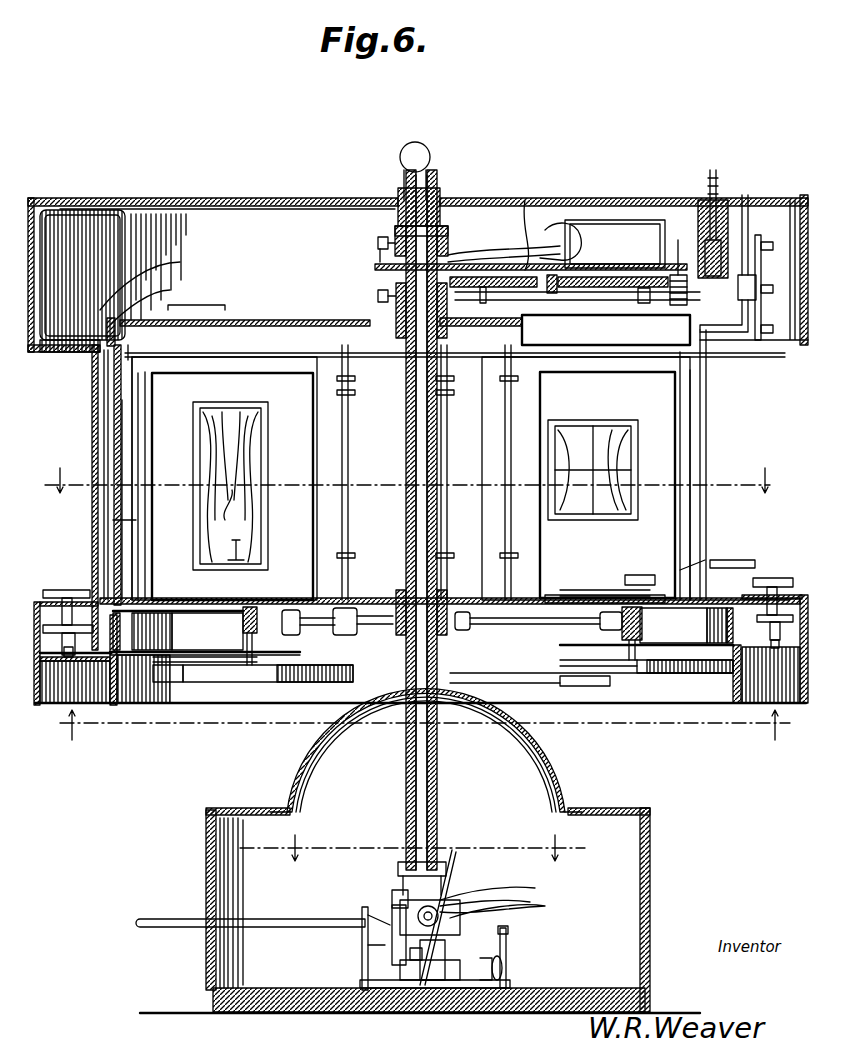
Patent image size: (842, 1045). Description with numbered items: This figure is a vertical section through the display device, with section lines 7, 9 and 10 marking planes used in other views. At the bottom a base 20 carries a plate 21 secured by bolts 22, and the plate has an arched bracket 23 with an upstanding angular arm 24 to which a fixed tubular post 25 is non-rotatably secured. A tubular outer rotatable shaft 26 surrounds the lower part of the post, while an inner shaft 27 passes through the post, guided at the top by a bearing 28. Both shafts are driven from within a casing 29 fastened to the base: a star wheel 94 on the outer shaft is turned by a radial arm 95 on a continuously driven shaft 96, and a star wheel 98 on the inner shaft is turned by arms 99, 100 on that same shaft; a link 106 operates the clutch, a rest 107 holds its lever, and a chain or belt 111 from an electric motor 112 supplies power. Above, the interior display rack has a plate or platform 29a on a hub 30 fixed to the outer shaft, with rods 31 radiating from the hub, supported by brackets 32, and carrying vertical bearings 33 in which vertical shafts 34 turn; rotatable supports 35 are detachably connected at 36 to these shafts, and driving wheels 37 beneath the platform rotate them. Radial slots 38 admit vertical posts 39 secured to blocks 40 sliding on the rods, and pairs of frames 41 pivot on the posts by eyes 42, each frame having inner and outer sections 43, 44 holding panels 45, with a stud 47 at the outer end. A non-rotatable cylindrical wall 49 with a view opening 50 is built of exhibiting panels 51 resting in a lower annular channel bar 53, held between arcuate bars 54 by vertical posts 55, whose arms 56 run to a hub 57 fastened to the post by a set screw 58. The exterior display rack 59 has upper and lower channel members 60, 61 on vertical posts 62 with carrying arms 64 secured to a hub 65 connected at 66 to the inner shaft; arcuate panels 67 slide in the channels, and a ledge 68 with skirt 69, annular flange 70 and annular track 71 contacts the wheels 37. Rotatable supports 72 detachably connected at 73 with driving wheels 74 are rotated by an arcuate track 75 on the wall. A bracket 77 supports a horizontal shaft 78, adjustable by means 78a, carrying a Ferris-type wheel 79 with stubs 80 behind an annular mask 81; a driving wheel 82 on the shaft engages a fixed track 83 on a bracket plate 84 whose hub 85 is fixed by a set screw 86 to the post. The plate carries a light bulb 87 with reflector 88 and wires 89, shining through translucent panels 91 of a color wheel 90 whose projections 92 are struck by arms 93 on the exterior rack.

The section line 7 is at (411, 458).
The section line 9 is at (418, 724).
The section line 10 is at (426, 848).
The base 20 is at (300, 1012).
The plate 21 is at (510, 985).
The bolts 22 is at (350, 988).
The arched bracket 23 is at (475, 975).
The upstanding angular arm 24 is at (460, 900).
The tubular post 25 is at (380, 270).
The outer rotatable shaft 26 is at (406, 752).
The inner shaft 27 is at (440, 206).
The bearing 28 is at (395, 235).
The casing / interior display rack 29 is at (690, 466).
The plate or platform 29a is at (712, 598).
The hub 30 is at (398, 640).
The rods 31 is at (318, 640).
The brackets 32 is at (330, 682).
The vertical bearings 33 is at (240, 630).
The vertical shafts 34 is at (655, 690).
The rotatable supports 35 is at (600, 592).
The detachable connection 36 is at (632, 576).
The driving wheels 37 is at (200, 682).
The radial slots 38 is at (555, 595).
The vertical posts 39 is at (349, 492).
The blocks 40 is at (340, 640).
The frames 41 is at (145, 393).
The eyes 42 is at (518, 380).
The inner frame section 43 is at (312, 405).
The outer frame section 44 is at (142, 482).
The panels 45 is at (300, 462).
The stud 47 is at (137, 548).
The cylindrical wall 49 is at (125, 428).
The view opening 50 is at (690, 420).
The exhibiting panels 51 is at (140, 496).
The lower annular channel bar 53 is at (215, 704).
The arcuate bars 54 is at (130, 315).
The vertical posts 55 is at (700, 352).
The arms 56 is at (268, 324).
The hub 57 is at (300, 326).
The set screw 58 is at (378, 302).
The exterior display rack 59 is at (92, 500).
The upper annular channel member 60 is at (65, 352).
The lower annular channel member 61 is at (95, 410).
The vertical posts 62 is at (55, 212).
The carrying arms 64 is at (140, 203).
The hub 65 is at (300, 204).
The pin and slot connection 66 is at (427, 178).
The arcuate panels 67 is at (123, 530).
The ledge 68 is at (40, 600).
The skirt 69 is at (38, 703).
The annular flange 70 is at (130, 703).
The annular track 71 is at (145, 650).
The rotatable supports 72 is at (70, 625).
The detachable connection 73 is at (65, 590).
The driving wheels 74 is at (90, 703).
The arcuate track 75 is at (737, 703).
The bracket 77 is at (698, 230).
The horizontal shaft 78 is at (742, 335).
The adjusting means 78a is at (722, 195).
The wheel 79 is at (758, 342).
The stubs 80 is at (768, 242).
The annular mask 81 is at (800, 198).
The driving wheel 82 is at (682, 269).
The arcuate fixed track 83 is at (665, 268).
The horizontal bracket plate 84 is at (490, 270).
The hub 85 is at (448, 248).
The set screw 86 is at (378, 243).
The light bulb 87 is at (580, 225).
The reflector 88 is at (615, 220).
The current-conducting wires 89 is at (525, 200).
The color wheel 90 is at (580, 288).
The translucent panels 91 is at (620, 300).
The projections 92 is at (480, 292).
The arms 93 is at (225, 305).
The star wheel 94 is at (450, 875).
The radial arm 95 is at (392, 912).
The continuously driven shaft 96 is at (440, 916).
The star wheel 98 is at (390, 1012).
The arm 99 is at (450, 860).
The arm 100 is at (445, 1012).
The link 106 is at (295, 919).
The rest 107 is at (360, 942).
The chain or belt 111 is at (510, 936).
The electric motor 112 is at (508, 958).